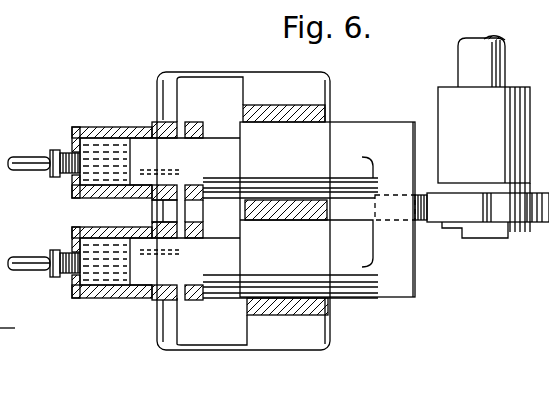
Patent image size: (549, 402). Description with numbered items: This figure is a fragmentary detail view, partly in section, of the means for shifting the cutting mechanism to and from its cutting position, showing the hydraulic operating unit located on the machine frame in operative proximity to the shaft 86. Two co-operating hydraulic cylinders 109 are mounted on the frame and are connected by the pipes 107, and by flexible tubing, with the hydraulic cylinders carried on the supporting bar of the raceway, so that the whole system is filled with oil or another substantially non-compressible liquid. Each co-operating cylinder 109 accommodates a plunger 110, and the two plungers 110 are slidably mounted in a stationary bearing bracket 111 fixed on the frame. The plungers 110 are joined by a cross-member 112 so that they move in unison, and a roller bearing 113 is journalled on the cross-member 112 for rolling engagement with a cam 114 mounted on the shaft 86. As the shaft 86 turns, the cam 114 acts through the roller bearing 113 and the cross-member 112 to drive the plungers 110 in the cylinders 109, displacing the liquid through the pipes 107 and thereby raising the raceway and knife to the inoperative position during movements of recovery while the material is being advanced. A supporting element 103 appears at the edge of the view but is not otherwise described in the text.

The shaft 86 is at (491, 63).
The support 103 is at (15, 328).
The pipes 107 is at (30, 158).
The co-operating hydraulic cylinders 109 is at (108, 127).
The plungers 110 is at (214, 158).
The stationary bearing bracket 111 is at (300, 110).
The cross-member 112 is at (405, 248).
The roller bearing 113 is at (420, 196).
The cam 114 is at (510, 212).